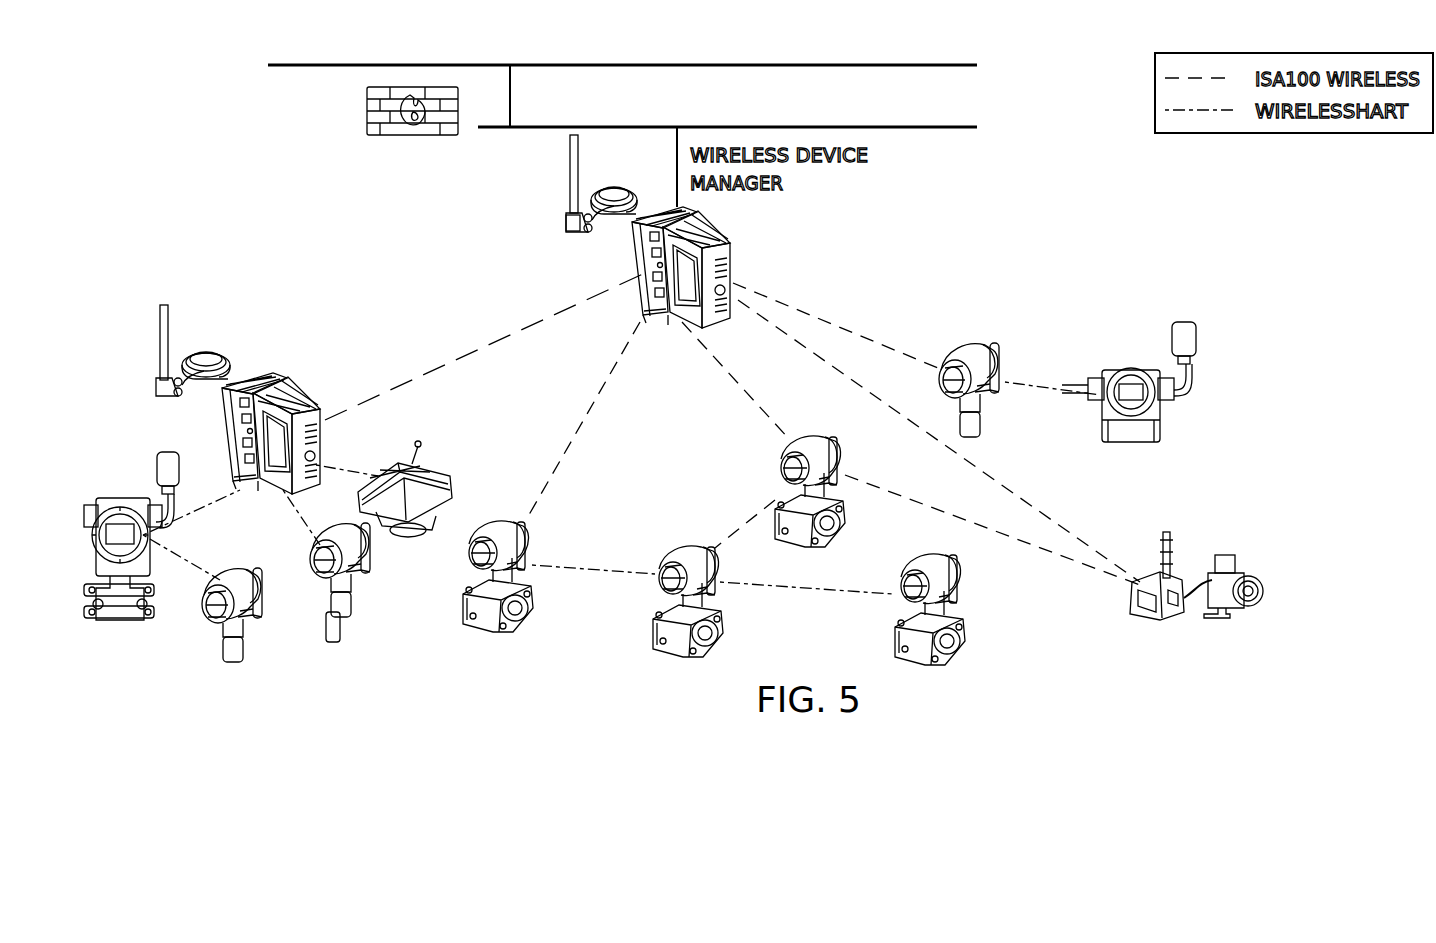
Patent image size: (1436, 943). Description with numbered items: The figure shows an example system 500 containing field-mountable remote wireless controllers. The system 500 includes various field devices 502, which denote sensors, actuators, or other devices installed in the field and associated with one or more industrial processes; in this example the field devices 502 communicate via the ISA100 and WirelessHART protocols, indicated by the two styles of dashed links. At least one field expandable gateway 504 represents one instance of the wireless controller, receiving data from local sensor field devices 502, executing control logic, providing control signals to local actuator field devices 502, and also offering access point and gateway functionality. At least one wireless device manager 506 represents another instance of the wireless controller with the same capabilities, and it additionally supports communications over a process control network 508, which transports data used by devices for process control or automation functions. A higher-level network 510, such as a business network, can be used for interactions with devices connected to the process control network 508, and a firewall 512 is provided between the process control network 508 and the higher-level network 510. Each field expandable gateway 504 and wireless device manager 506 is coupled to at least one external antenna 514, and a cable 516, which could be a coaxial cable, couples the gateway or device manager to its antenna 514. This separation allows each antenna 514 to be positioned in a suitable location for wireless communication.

The system 500 is at (1316, 469).
The field devices 502 is at (1160, 406).
The field expandable gateway 504 is at (320, 450).
The wireless device manager 506 is at (730, 268).
The process control network 508 is at (995, 124).
The higher-level network 510 is at (995, 61).
The firewall 512 is at (366, 102).
The external antenna 514 is at (568, 170).
The cable 516 is at (612, 210).